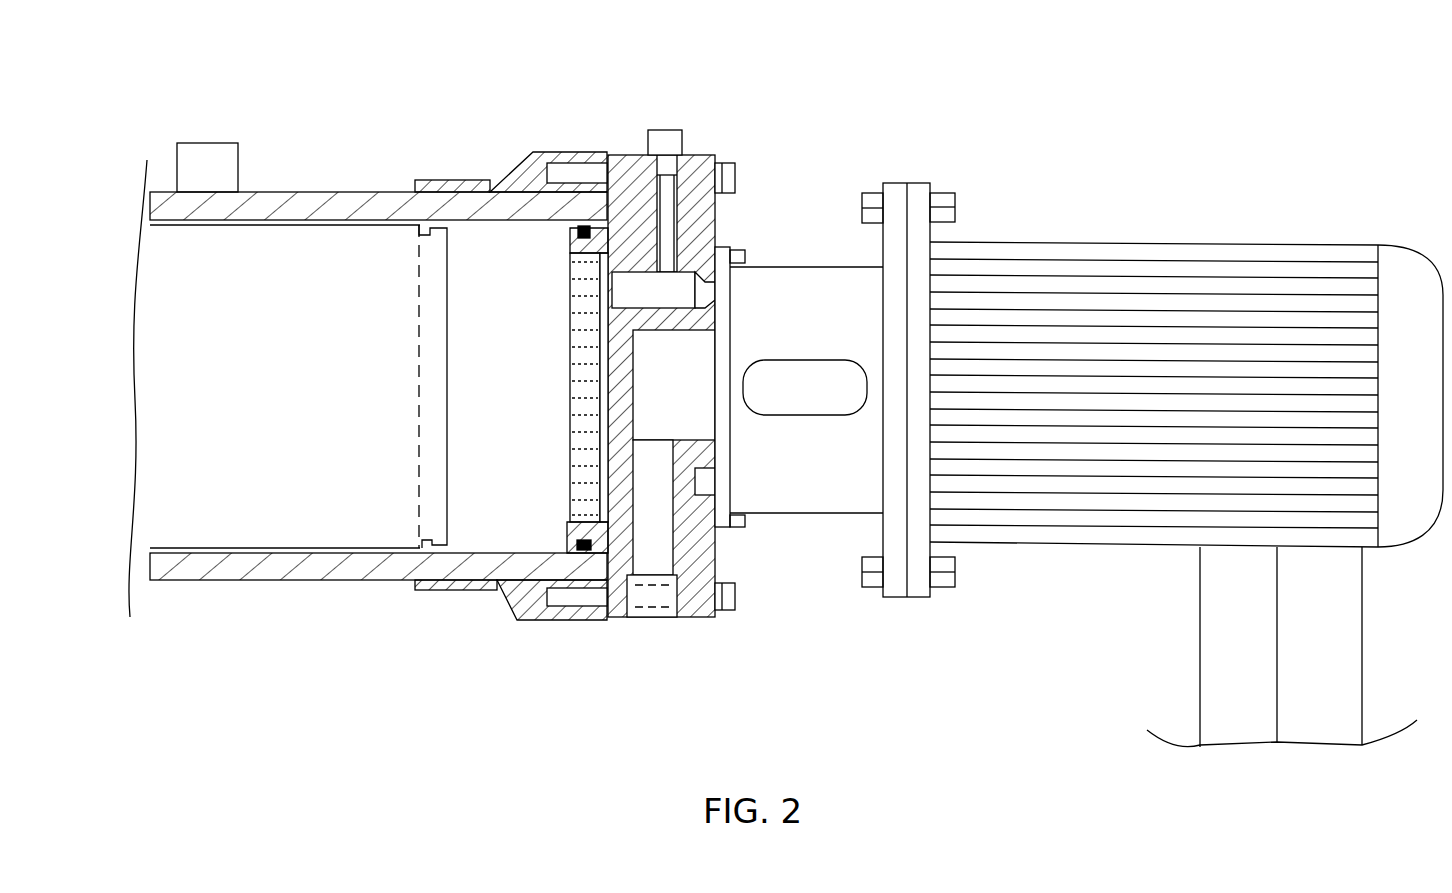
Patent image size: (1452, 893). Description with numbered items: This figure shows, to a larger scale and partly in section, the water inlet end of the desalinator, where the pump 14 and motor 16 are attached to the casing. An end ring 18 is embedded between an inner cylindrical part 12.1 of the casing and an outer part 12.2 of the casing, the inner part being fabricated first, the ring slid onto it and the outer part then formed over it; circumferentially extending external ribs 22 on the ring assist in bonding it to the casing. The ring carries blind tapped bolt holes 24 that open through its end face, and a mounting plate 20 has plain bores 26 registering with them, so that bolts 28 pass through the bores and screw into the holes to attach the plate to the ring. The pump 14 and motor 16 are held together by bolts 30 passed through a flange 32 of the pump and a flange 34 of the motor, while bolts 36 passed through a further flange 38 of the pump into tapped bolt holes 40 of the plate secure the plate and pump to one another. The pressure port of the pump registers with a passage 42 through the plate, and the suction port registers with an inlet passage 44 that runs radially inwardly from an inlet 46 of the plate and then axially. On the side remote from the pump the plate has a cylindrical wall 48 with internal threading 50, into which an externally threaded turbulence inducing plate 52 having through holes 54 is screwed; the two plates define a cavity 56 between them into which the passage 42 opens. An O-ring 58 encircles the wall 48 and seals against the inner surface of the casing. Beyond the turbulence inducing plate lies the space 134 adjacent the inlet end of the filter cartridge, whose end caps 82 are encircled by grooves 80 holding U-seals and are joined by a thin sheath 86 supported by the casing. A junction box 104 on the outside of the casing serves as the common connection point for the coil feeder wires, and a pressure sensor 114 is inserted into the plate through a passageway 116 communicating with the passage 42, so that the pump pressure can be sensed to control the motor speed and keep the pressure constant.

The inner cylindrical part of the casing 12.1 is at (528, 226).
The outer part of the casing 12.2 is at (492, 135).
The pump 14 is at (790, 515).
The motor 16 is at (1218, 242).
The end ring 18 is at (538, 150).
The mounting plate 20 is at (633, 152).
The external ribs 22 is at (412, 192).
The tapped bolt holes 24 is at (575, 152).
The plain bores 26 is at (668, 612).
The bolts 28 is at (738, 598).
The bolts 30 is at (955, 207).
The flange of the pump 32 is at (902, 190).
The flange of the motor 34 is at (930, 185).
The bolts 36 is at (747, 257).
The flange of the pump 38 is at (733, 247).
The tapped bolt holes 40 is at (733, 250).
The passage 42 is at (675, 292).
The inlet passage 44 is at (683, 390).
The inlet 46 is at (650, 622).
The cylindrical wall 48 is at (573, 537).
The internal threading 50 is at (572, 517).
The turbulence inducing plate 52 is at (575, 411).
The through holes 54 is at (572, 373).
The cavity 56 is at (603, 470).
The O-ring 58 is at (572, 255).
The grooves 80 is at (423, 240).
The end caps 82 is at (447, 455).
The sheath 86 is at (235, 547).
The junction box 104 is at (208, 143).
The pressure sensor 114 is at (672, 133).
The passageway 116 is at (660, 133).
The space 134 is at (473, 330).